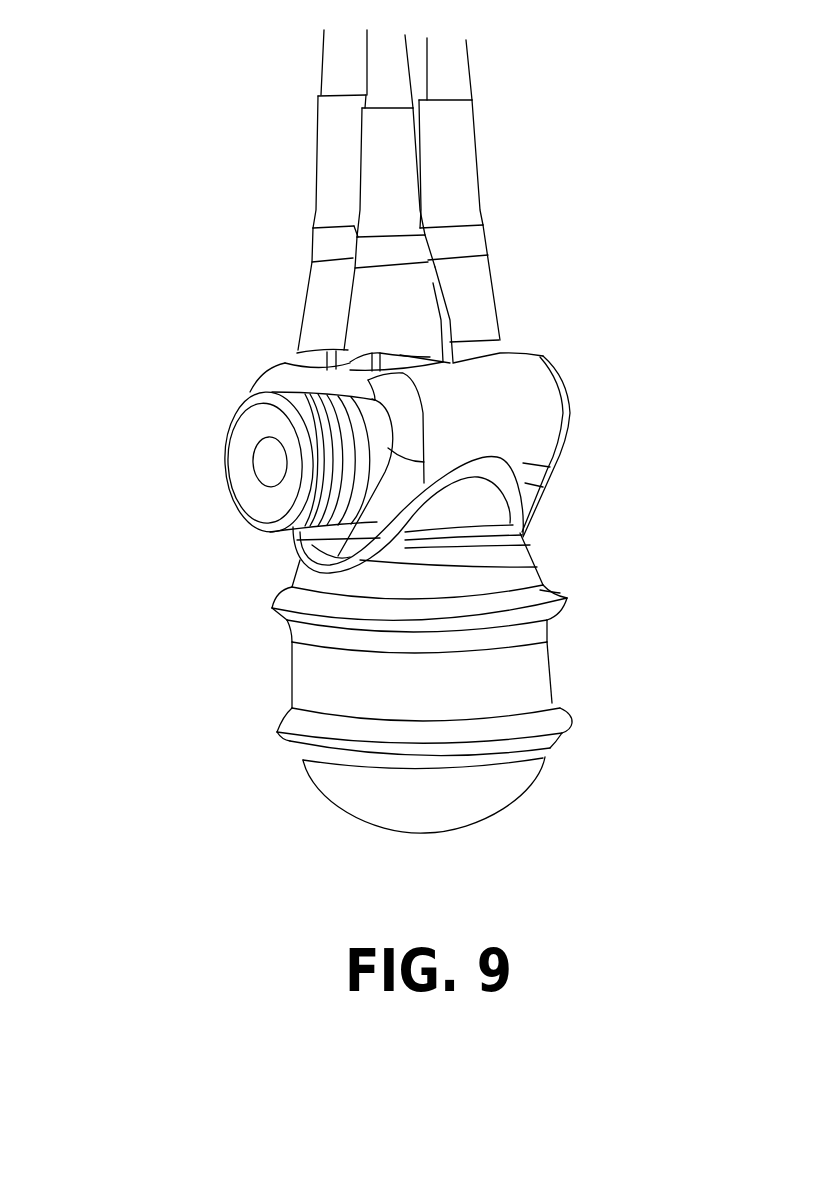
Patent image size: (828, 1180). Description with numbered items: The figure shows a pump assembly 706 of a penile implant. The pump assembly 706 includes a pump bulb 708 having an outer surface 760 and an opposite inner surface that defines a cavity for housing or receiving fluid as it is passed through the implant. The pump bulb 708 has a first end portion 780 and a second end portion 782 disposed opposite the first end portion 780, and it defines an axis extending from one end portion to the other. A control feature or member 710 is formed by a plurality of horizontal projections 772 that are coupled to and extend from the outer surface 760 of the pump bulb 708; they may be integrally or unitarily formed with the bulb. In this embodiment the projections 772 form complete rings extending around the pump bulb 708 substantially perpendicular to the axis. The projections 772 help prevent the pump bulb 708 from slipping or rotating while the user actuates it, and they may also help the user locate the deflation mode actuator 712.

The pump assembly 706 is at (120, 594).
The pump bulb 708 is at (290, 680).
The control feature or member 710 is at (282, 622).
The deflation mode actuator 712 is at (242, 469).
The outer surface 760 is at (545, 590).
The horizontal projections 772 is at (565, 600).
The first end portion 780 is at (490, 815).
The second end portion 782 is at (532, 568).